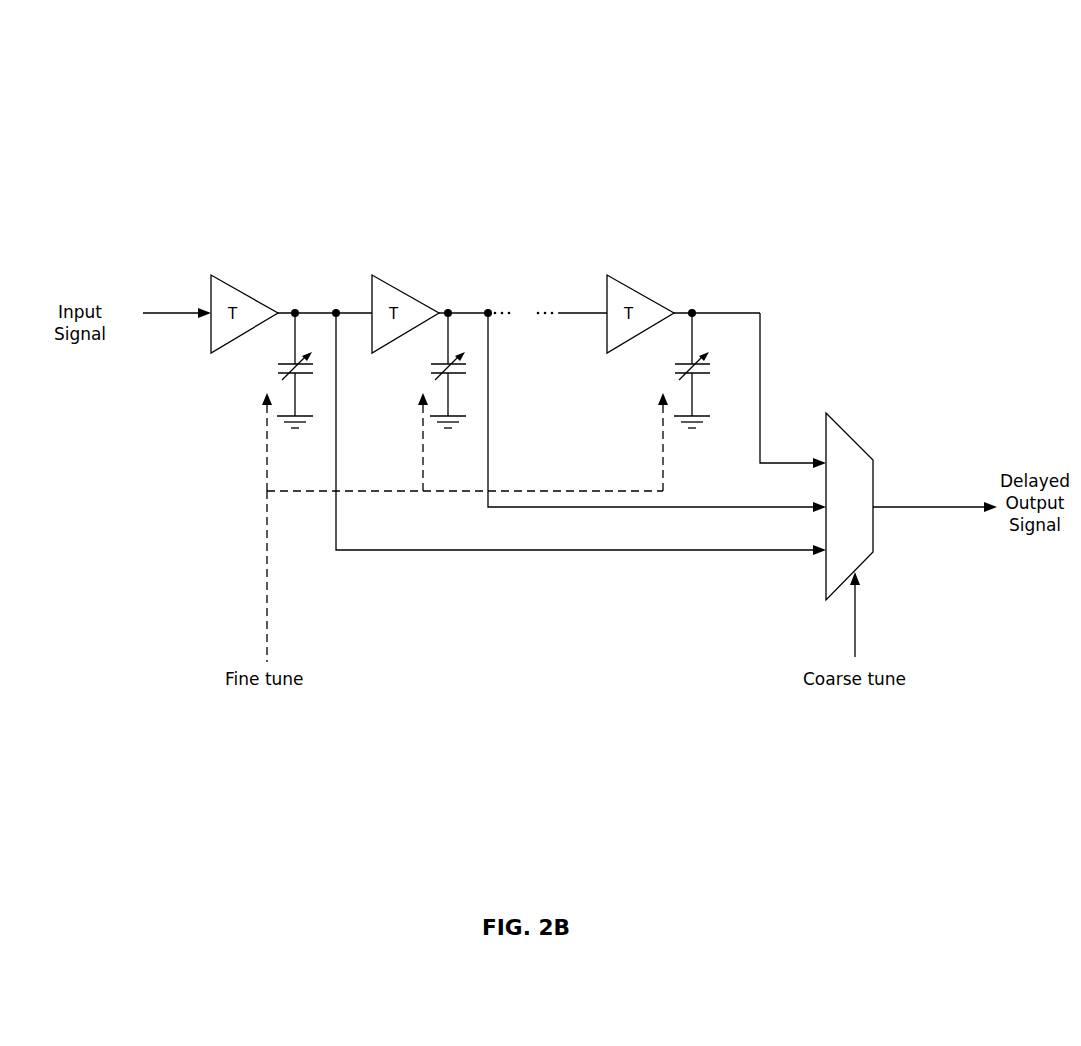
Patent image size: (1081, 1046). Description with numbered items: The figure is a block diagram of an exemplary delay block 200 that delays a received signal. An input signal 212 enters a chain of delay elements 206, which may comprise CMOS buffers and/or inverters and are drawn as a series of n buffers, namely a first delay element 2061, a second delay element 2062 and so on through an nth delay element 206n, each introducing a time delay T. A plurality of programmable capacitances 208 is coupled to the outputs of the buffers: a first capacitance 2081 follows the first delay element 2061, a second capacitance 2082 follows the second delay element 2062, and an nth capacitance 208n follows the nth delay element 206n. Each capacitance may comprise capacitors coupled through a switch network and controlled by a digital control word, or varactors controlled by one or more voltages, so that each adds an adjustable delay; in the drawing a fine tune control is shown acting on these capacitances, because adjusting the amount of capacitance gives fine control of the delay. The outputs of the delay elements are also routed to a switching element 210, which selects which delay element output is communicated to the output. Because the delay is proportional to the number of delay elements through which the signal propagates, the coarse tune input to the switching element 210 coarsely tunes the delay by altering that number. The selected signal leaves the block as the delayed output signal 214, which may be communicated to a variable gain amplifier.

The delay block 200 is at (102, 101).
The delay elements 206 is at (442, 305).
The first delay element 2061 is at (233, 287).
The second delay element 2062 is at (394, 287).
The nth delay element 206n is at (629, 287).
The capacitances 208 is at (494, 370).
The first capacitance 2081 is at (295, 370).
The second capacitance 2082 is at (448, 370).
The nth capacitance 208n is at (693, 370).
The switching element 210 is at (848, 440).
The input signal 212 is at (175, 312).
The delayed output signal 214 is at (928, 505).